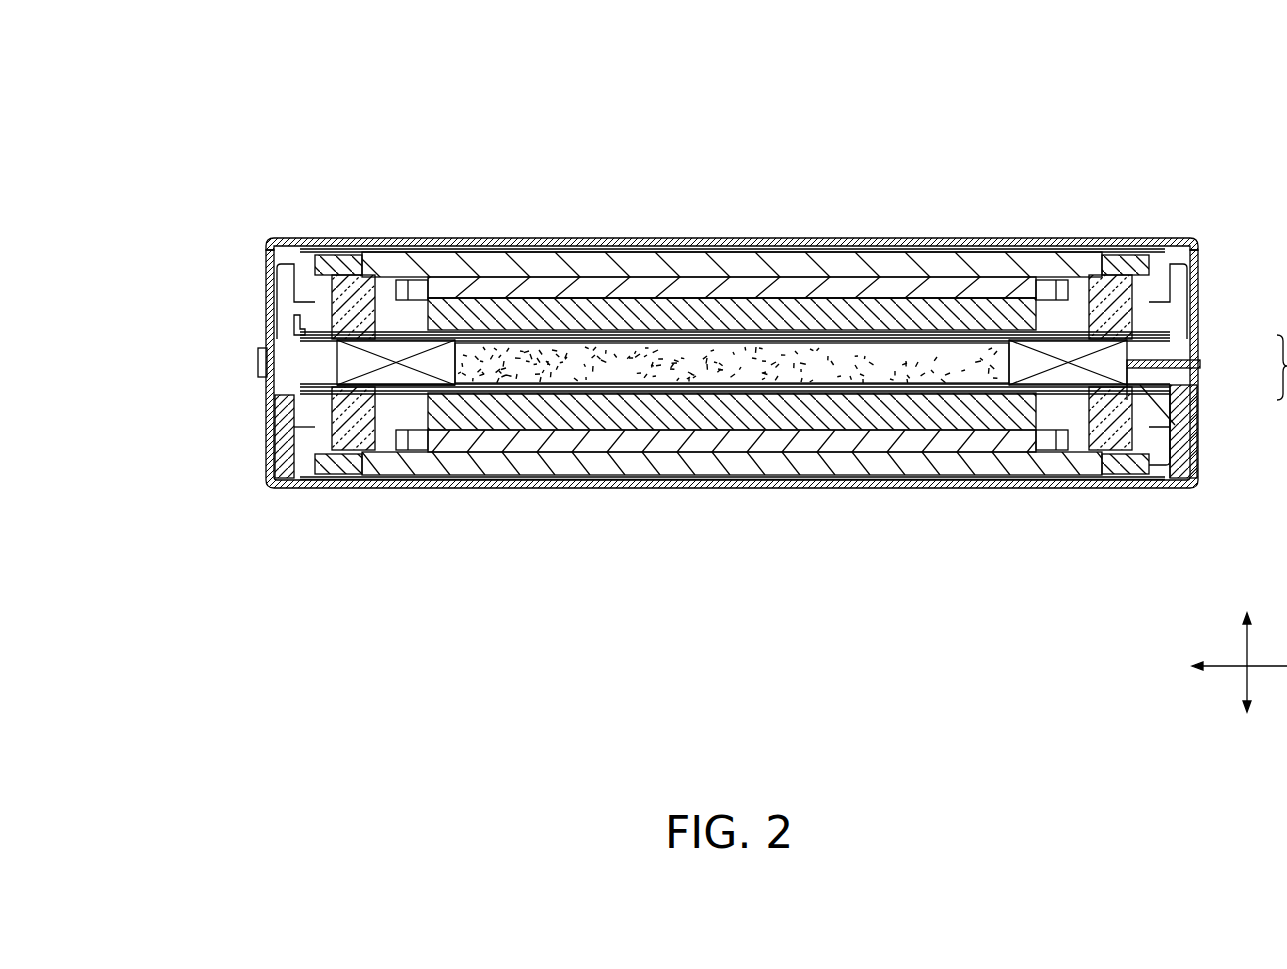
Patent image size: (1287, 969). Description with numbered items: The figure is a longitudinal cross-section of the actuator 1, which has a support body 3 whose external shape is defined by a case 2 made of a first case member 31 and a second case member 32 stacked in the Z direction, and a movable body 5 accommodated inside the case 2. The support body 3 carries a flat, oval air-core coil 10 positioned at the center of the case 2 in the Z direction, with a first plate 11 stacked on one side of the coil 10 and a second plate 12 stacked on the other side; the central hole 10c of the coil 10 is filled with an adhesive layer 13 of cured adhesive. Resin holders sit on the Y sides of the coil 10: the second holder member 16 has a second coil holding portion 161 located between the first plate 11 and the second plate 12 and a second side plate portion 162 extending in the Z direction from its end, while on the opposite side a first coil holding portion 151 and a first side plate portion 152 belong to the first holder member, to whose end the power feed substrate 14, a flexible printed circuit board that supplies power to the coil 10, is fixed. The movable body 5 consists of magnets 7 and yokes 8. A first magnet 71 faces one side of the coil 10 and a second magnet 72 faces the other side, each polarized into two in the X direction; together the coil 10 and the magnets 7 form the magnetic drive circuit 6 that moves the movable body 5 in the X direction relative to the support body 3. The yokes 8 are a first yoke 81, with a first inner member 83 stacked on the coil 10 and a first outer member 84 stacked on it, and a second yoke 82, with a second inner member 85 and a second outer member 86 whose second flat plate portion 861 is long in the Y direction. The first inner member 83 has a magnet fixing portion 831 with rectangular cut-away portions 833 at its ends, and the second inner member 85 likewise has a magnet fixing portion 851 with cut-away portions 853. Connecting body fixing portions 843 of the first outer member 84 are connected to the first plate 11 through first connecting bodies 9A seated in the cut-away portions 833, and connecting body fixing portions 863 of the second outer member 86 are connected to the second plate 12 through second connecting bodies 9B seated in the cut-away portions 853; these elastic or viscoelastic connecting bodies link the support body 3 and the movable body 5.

The actuator 1 is at (198, 105).
The case 2 is at (760, 346).
The support body 3 is at (252, 256).
The first case member 31 is at (1142, 490).
The second case member 32 is at (1176, 240).
The movable body 5 is at (481, 253).
The magnetic drive circuit 6 is at (627, 124).
The magnets 7 is at (650, 156).
The first magnet 71 is at (625, 410).
The second magnet 72 is at (588, 310).
The yokes 8 is at (920, 126).
The first yoke 81 is at (943, 157).
The second yoke 82 is at (852, 157).
The first inner member 83 is at (890, 445).
The magnet fixing portion 831 is at (797, 445).
The cut-away portions 833 is at (412, 445).
The first outer member 84 is at (925, 455).
The connecting body fixing portions 843 is at (325, 465).
The second inner member 85 is at (829, 270).
The magnet fixing portion 851 is at (962, 300).
The cut-away portions 853 is at (413, 290).
The second outer member 86 is at (818, 292).
The second flat plate portion 861 is at (752, 265).
The connecting body fixing portions 863 is at (336, 270).
The first connecting bodies 9A is at (358, 440).
The second connecting bodies 9B is at (358, 300).
The coil 10 is at (445, 355).
The central hole 10c is at (468, 388).
The first plate 11 is at (540, 380).
The second plate 12 is at (708, 386).
The adhesive layer 13 is at (660, 355).
The power feed substrate 14 is at (1203, 420).
The second holder member 16 is at (180, 333).
The second coil holding portion 161 is at (260, 343).
The second side plate portion 162 is at (272, 408).
The first coil holding portion 151 is at (1150, 365).
The first side plate portion 152 is at (1180, 410).